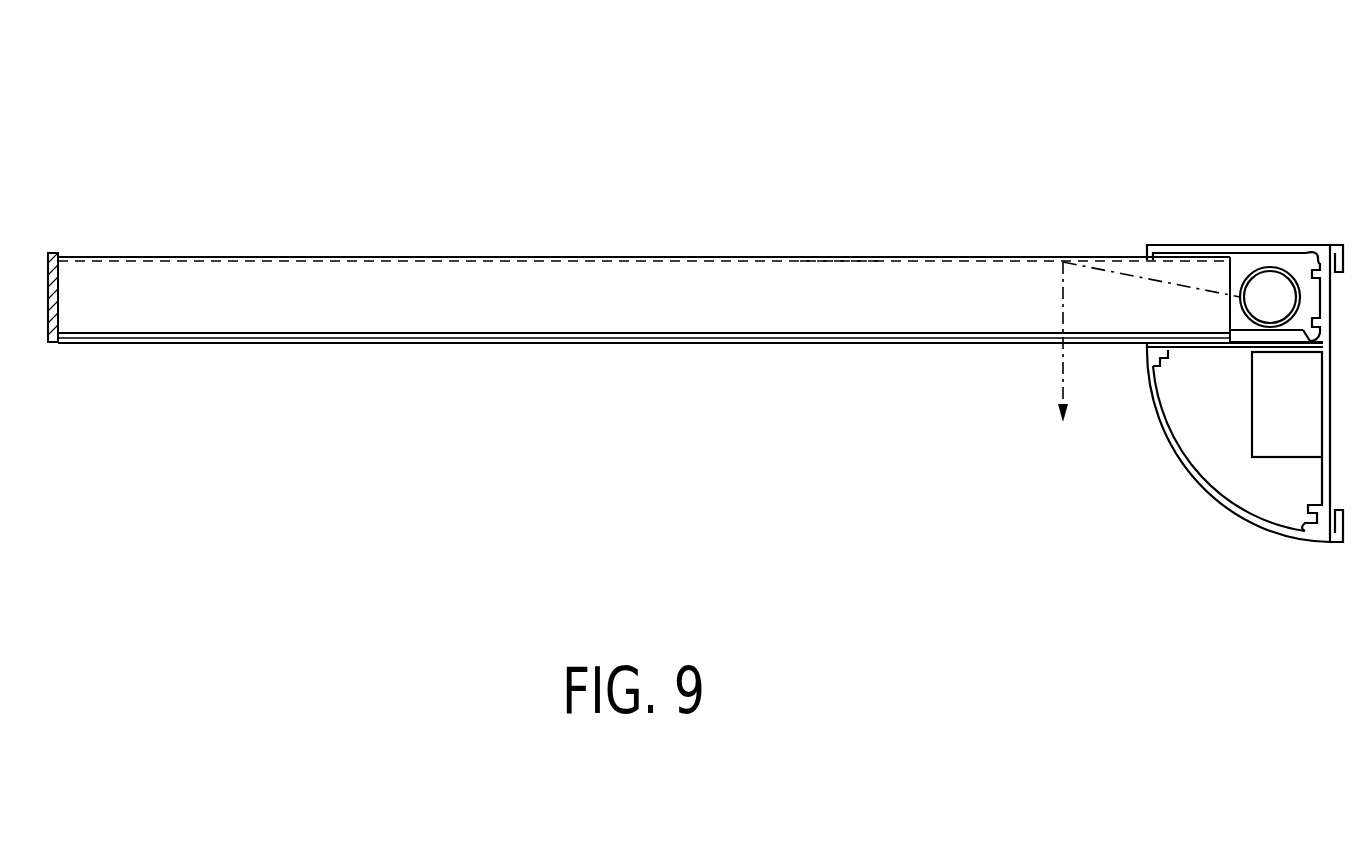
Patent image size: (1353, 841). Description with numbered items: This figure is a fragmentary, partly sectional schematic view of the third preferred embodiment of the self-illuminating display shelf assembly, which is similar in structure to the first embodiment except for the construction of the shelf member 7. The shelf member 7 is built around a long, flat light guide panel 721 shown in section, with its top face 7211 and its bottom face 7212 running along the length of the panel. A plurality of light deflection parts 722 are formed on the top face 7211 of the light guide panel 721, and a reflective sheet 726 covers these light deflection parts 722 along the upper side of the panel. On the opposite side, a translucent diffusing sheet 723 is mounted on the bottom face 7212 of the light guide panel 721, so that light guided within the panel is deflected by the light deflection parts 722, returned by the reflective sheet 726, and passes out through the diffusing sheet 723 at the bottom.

The shelf member 7 is at (482, 160).
The light guide panel 721 is at (615, 273).
The top face 7211 is at (724, 256).
The bottom face 7212 is at (692, 343).
The light deflection parts 722 is at (338, 258).
The translucent diffusing sheet 723 is at (593, 343).
The reflective sheet 726 is at (842, 256).